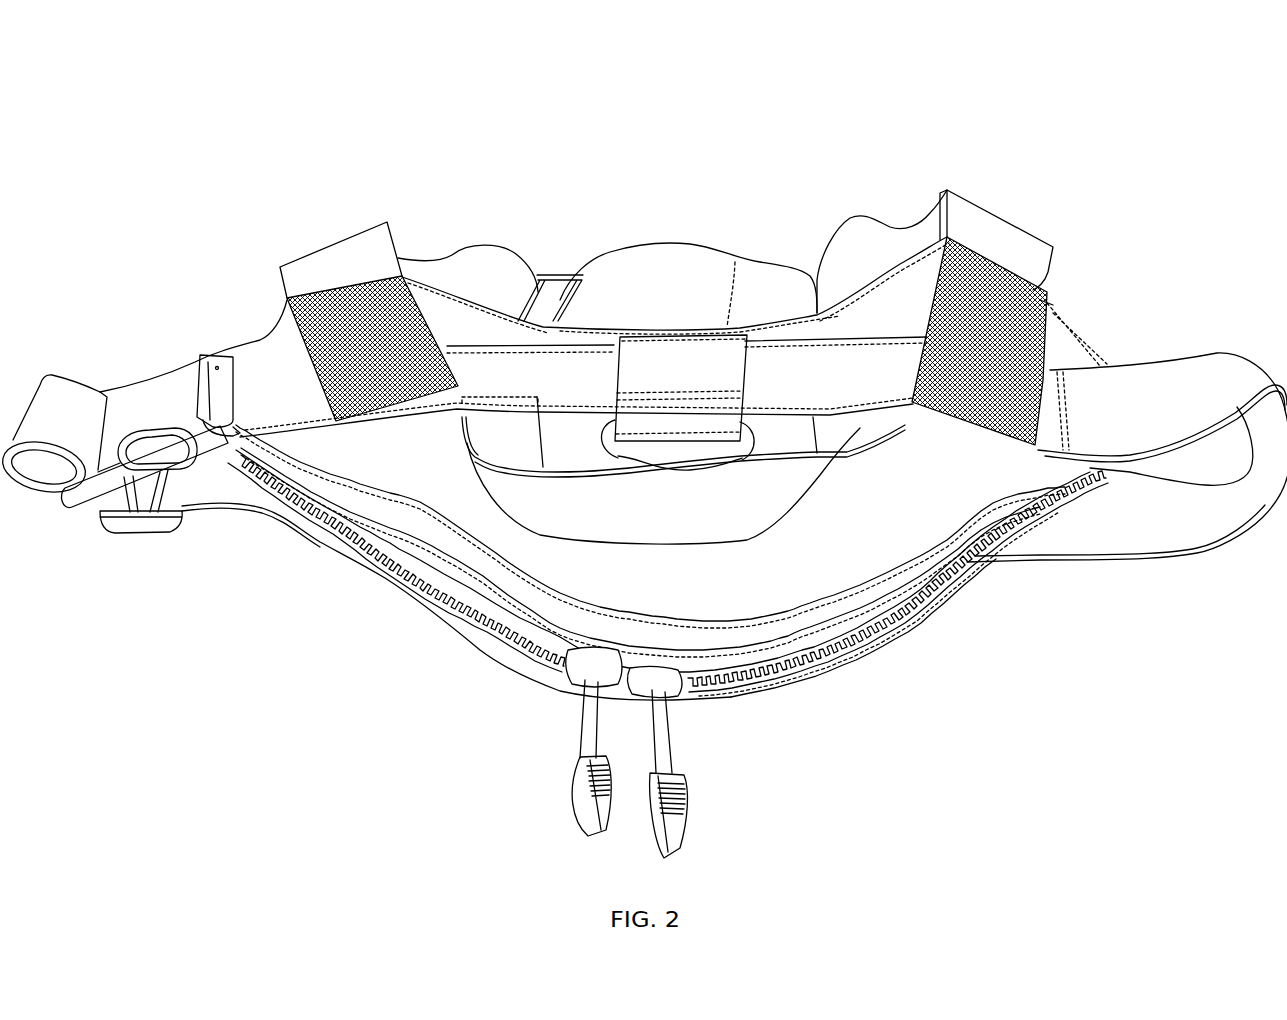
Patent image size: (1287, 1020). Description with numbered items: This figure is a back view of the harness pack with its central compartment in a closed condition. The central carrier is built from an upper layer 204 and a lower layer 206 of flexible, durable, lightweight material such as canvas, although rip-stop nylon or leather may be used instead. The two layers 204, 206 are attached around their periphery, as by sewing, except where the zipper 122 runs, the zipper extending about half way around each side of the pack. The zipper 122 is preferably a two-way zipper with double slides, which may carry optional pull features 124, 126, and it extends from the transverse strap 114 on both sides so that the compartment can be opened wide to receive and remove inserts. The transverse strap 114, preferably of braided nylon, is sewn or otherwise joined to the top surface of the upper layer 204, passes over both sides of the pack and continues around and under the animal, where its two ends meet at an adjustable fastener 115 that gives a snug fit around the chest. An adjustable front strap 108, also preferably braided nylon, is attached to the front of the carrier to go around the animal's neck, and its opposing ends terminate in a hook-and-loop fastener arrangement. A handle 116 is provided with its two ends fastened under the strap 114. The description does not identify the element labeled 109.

The front strap 108 is at (485, 256).
The padded mesh panel 109 is at (1012, 331).
The transverse strap 114 is at (1187, 377).
The adjustable fastener 115 is at (142, 326).
The handle 116 is at (691, 483).
The zipper 122 is at (918, 610).
The pull feature 124 is at (702, 795).
The pull feature 126 is at (550, 788).
The upper layer 204 is at (907, 515).
The lower layer 206 is at (344, 543).